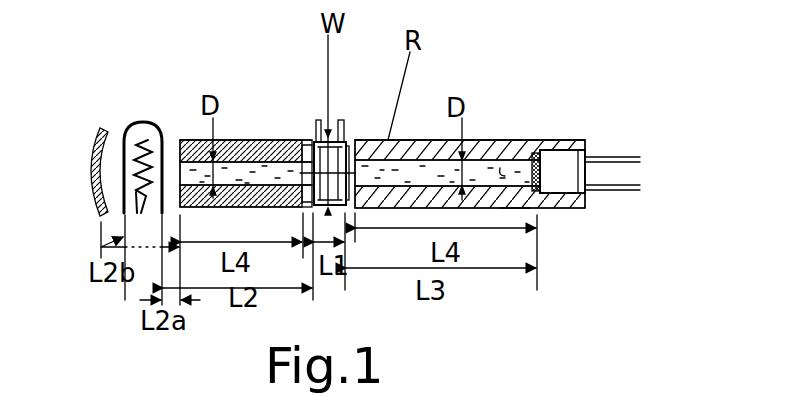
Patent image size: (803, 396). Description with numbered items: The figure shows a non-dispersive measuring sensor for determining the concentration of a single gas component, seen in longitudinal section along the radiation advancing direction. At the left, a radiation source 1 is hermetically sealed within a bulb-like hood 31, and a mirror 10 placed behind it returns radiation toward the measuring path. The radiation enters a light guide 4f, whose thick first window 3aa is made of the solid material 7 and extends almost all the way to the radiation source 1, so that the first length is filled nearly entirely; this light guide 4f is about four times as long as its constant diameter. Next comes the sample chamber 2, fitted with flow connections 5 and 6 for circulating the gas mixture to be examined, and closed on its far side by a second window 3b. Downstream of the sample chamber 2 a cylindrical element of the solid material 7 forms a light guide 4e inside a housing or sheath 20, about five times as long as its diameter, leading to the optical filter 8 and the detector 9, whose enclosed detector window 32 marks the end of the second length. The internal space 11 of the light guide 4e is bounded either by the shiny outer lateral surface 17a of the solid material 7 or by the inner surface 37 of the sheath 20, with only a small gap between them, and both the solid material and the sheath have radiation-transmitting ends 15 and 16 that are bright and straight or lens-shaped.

The radiation source 1 is at (150, 140).
The sample chamber 2 is at (323, 130).
The thick first window 3aa is at (299, 184).
The second window 3b is at (349, 140).
The light guide 4e is at (505, 140).
The light guide 4f is at (233, 140).
The flow connection 5 is at (316, 108).
The flow connection 6 is at (343, 98).
The solid material 7 is at (222, 160).
The optical filter 8 is at (535, 152).
The detector 9 is at (563, 157).
The mirror 10 is at (96, 138).
The internal space 11 is at (270, 166).
The radiation-transmitting end 15 is at (186, 170).
The radiation-transmitting end 16 is at (294, 166).
The lateral surface 17a is at (503, 165).
The sheath 20 is at (224, 196).
The hood 31 is at (134, 118).
The detector window 32 is at (548, 172).
The inner surface 37 is at (513, 192).